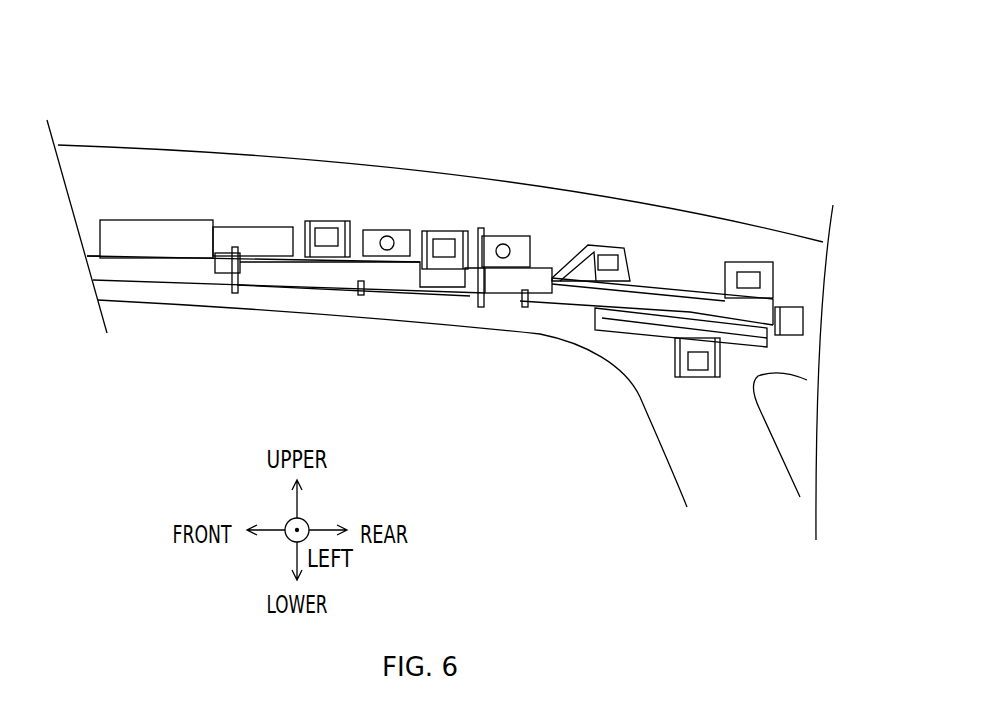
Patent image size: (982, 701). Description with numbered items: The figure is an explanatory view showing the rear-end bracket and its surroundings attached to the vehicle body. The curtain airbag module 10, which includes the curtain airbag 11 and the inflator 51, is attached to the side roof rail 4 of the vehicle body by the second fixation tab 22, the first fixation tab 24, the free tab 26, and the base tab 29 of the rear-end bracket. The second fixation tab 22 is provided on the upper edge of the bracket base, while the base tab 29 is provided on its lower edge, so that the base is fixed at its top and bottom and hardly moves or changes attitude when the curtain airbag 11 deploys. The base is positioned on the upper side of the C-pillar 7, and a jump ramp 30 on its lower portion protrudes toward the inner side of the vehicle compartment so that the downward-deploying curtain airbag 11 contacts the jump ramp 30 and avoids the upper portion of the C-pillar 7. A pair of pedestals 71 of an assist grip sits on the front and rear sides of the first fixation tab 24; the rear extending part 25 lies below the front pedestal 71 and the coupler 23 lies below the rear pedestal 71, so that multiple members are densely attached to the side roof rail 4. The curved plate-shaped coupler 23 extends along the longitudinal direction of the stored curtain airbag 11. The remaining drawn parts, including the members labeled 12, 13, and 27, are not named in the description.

The side roof rail 4 is at (196, 155).
The C-pillar 7 is at (708, 463).
The curtain airbag module 10 is at (183, 197).
The curtain airbag 11 is at (331, 338).
The rail 12 is at (286, 323).
The bracket 13 is at (604, 184).
The second fixation tab 22 is at (615, 245).
The coupler 23 is at (503, 282).
The first fixation tab 24 is at (452, 230).
The rear extending part 25 is at (373, 273).
The free tab 26 is at (333, 220).
The fastening bolt 27 is at (273, 262).
The base tab 29 is at (692, 377).
The jump ramp 30 is at (632, 337).
The inflator 51 is at (244, 227).
The pedestal 71 is at (396, 230).